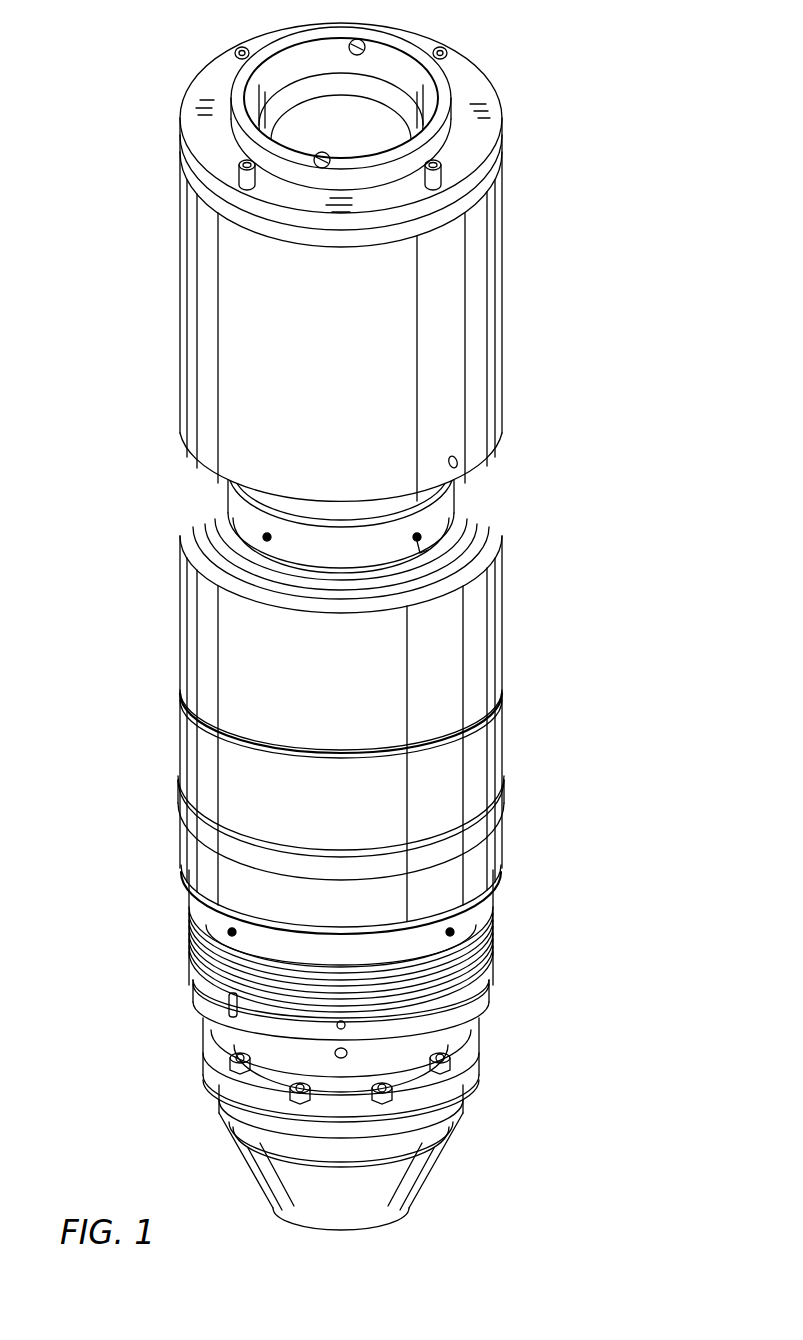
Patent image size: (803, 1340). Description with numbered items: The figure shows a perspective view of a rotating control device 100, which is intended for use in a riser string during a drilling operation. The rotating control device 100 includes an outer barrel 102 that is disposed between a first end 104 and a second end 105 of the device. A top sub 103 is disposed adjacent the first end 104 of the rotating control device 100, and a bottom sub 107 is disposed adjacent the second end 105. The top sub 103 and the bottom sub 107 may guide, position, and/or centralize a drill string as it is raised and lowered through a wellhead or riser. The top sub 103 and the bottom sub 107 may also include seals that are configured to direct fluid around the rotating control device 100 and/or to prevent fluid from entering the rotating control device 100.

The rotating control device 100 is at (660, 78).
The outer barrel 102 is at (505, 612).
The top sub 103 is at (507, 281).
The first end 104 is at (468, 93).
The second end 105 is at (383, 1220).
The bottom sub 107 is at (490, 998).